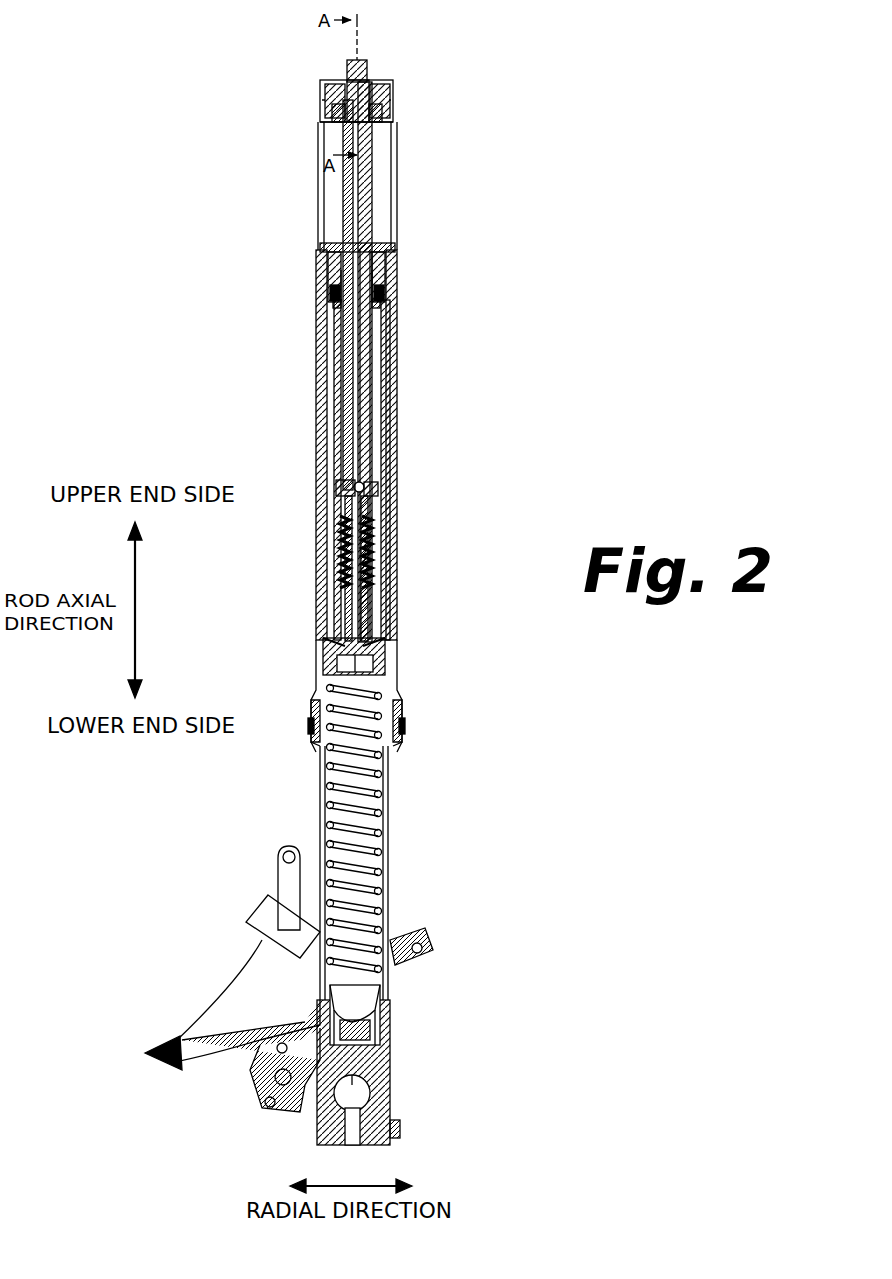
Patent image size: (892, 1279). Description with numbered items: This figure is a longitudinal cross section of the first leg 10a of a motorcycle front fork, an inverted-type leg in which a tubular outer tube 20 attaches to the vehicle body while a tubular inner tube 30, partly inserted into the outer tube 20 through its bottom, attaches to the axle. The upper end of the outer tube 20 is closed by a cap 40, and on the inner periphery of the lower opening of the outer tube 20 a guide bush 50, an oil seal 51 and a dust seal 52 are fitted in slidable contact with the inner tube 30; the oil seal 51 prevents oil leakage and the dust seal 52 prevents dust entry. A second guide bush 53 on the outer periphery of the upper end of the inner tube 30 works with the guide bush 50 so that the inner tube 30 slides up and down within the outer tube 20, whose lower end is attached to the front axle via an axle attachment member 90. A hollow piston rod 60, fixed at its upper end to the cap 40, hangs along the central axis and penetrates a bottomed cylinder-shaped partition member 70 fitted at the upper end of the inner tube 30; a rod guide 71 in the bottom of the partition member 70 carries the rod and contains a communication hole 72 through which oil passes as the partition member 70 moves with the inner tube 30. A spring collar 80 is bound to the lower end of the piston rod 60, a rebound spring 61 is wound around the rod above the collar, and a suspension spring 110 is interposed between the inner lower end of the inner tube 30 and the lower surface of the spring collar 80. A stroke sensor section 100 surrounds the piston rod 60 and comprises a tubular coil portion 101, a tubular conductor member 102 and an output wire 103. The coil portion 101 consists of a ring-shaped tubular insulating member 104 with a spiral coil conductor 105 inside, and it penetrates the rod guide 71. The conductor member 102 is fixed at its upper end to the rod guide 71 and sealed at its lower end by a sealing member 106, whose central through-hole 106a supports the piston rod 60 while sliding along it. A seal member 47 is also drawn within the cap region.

The first leg 10a is at (523, 97).
The outer tube 20 is at (396, 142).
The inner tube 30 is at (390, 786).
The cap 40 is at (330, 78).
The seal member 47 is at (338, 116).
The guide bush 50 is at (392, 708).
The oil seal 51 is at (398, 732).
The dust seal 52 is at (392, 758).
The guide bush 53 is at (387, 253).
The piston rod 60 is at (370, 516).
The rebound spring 61 is at (366, 538).
The partition member 70 is at (378, 239).
The rod guide 71 is at (380, 291).
The communication hole 72 is at (378, 306).
The spring collar 80 is at (387, 653).
The axle attachment member 90 is at (390, 1029).
The stroke sensor section 100 is at (440, 378).
The coil portion 101 is at (438, 168).
The conductor member 102 is at (374, 398).
The output wire 103 is at (370, 81).
The insulating member 104 is at (356, 172).
The coil conductor 105 is at (373, 190).
The sealing member 106 is at (372, 497).
The through-hole 106a is at (366, 485).
The suspension spring 110 is at (365, 832).